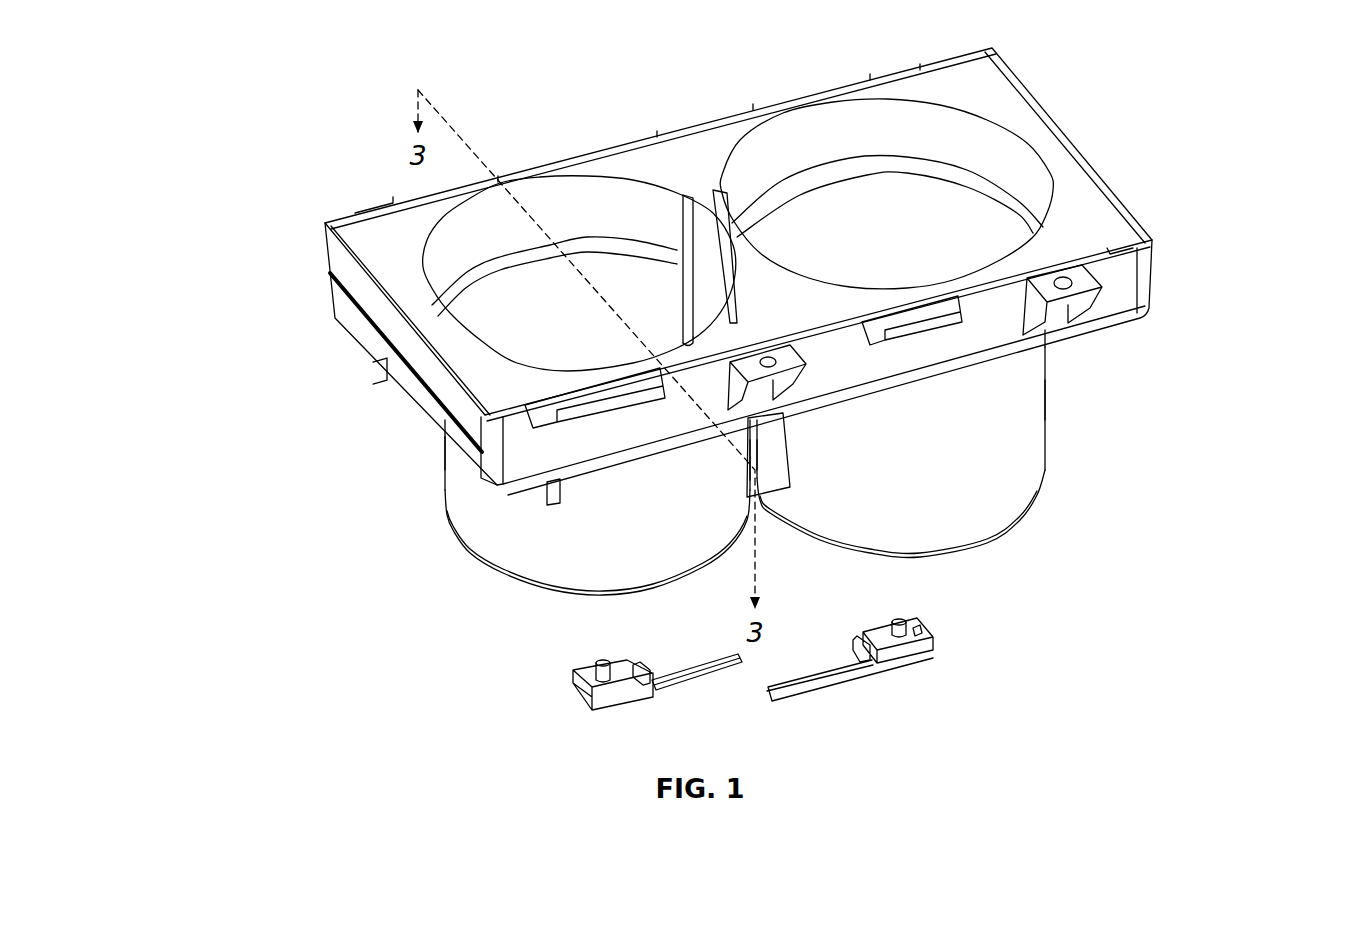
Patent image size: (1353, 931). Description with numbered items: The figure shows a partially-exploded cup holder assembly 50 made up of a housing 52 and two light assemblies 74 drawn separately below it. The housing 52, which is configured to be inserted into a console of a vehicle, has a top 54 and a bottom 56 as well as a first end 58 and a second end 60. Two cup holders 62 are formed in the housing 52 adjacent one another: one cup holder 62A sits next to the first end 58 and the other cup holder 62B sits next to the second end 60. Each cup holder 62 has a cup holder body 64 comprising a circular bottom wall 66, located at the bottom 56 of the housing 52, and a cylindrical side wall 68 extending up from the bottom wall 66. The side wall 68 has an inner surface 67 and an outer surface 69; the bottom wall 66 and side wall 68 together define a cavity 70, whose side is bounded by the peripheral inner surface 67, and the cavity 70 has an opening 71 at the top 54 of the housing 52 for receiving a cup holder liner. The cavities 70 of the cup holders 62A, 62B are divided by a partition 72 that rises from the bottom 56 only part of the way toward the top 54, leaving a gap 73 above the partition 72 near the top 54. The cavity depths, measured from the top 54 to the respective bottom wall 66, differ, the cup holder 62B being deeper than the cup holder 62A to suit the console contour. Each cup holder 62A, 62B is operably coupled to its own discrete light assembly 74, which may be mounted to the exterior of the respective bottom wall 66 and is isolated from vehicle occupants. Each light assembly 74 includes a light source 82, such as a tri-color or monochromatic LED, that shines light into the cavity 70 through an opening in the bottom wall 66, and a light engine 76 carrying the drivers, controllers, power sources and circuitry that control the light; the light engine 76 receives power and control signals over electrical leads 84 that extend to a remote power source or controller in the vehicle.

The cup holder assembly 50 is at (255, 114).
The housing 52 is at (1083, 186).
The top 54 is at (397, 180).
The bottom 56 is at (990, 545).
The first end 58 is at (320, 442).
The second end 60 is at (1202, 176).
The cup holder 62 is at (497, 552).
The cup holder 62A is at (545, 550).
The cup holder 62B is at (1007, 497).
The cup holder body 64 is at (443, 497).
The bottom wall 66 is at (672, 585).
The inner surface 67 is at (890, 260).
The side wall 68 is at (495, 555).
The outer surface 69 is at (890, 445).
The cavity 70 is at (593, 277).
The opening 71 is at (541, 218).
The partition 72 is at (705, 338).
The gap 73 is at (709, 260).
The light assembly 74 is at (606, 712).
The light engine 76 is at (636, 660).
The light source 82 is at (601, 661).
The electrical leads 84 is at (713, 682).